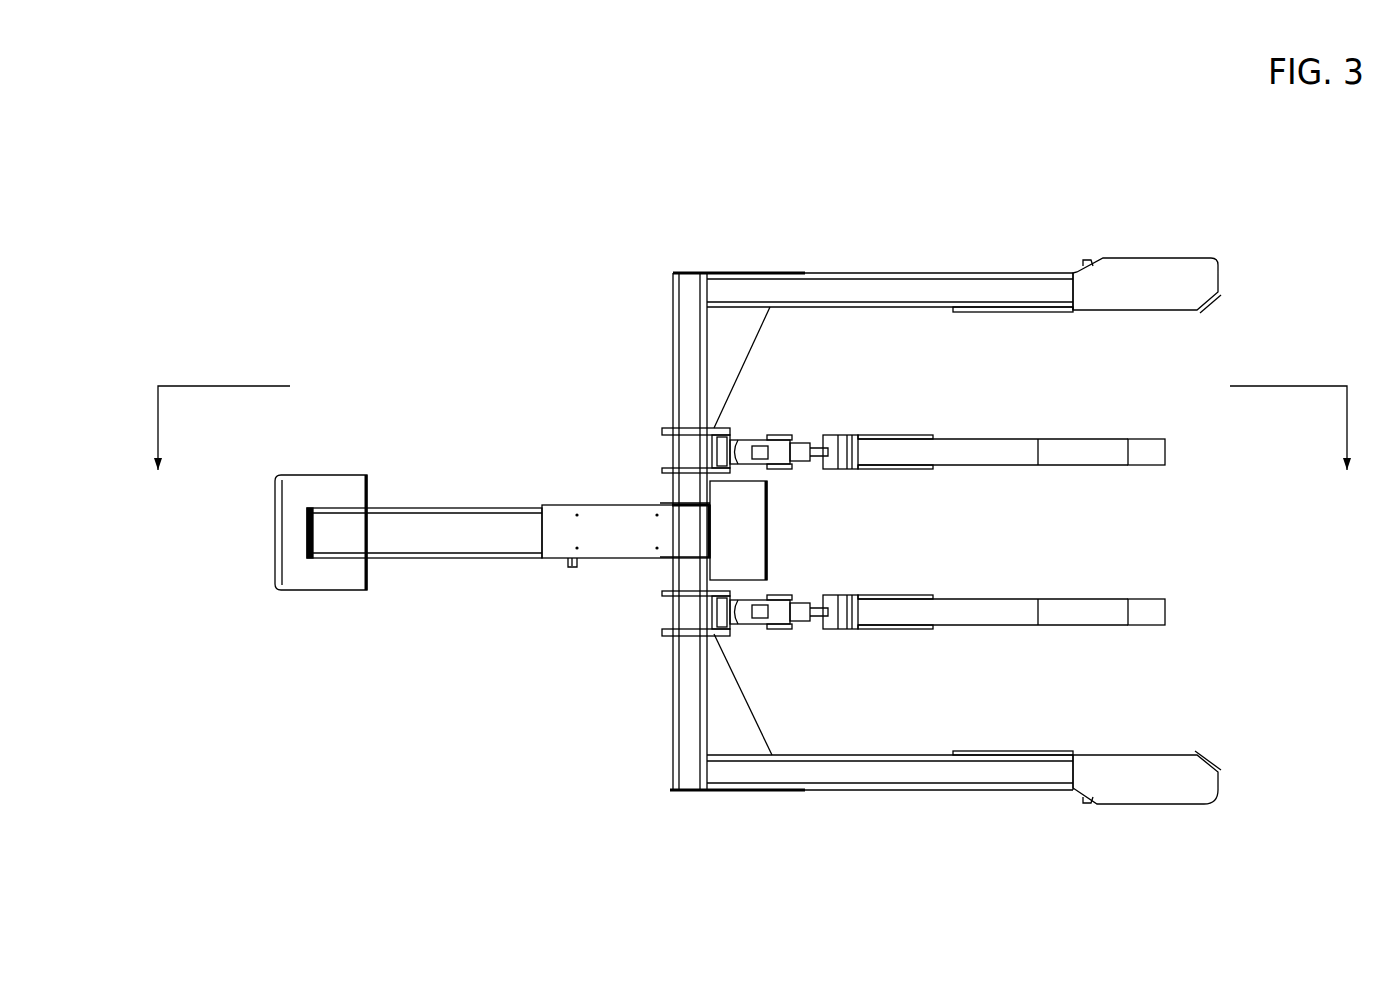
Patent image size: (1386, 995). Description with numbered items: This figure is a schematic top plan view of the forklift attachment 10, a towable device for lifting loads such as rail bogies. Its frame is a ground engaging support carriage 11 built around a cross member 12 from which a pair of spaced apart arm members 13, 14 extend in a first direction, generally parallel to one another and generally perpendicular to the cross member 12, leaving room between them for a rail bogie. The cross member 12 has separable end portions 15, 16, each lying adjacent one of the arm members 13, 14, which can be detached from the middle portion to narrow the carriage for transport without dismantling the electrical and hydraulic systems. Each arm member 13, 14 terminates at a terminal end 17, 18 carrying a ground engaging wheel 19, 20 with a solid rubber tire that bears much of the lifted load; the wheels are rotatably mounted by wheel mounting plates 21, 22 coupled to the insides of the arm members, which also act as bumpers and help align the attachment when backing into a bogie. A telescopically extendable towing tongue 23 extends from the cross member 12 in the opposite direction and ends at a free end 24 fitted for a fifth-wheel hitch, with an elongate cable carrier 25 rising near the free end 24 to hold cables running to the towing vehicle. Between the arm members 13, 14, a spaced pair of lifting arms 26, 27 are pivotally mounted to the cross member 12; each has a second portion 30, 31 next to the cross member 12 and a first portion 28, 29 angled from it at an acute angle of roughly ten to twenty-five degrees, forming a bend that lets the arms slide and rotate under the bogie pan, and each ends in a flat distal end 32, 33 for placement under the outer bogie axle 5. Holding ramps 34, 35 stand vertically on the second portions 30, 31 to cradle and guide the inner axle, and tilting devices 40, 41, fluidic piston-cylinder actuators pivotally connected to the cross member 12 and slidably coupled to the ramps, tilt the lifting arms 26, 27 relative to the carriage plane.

The outer bogie axle 5 is at (753, 415).
The forklift attachment 10 is at (507, 282).
The support carriage 11 is at (690, 257).
The cross member 12 is at (672, 487).
The arm member 13 is at (865, 775).
The arm member 14 is at (880, 291).
The end portion 15 is at (668, 727).
The end portion 16 is at (678, 351).
The terminal end 17 is at (1073, 790).
The terminal end 18 is at (1068, 275).
The ground engaging wheel 19 is at (1085, 806).
The ground engaging wheel 20 is at (1085, 258).
The wheel mounting plate 21 is at (1207, 805).
The wheel mounting plate 22 is at (1198, 275).
The towing tongue 23 is at (450, 567).
The free end 24 is at (275, 542).
The cable carrier 25 is at (312, 530).
The lifting arm 26 is at (1040, 608).
The lifting arm 27 is at (1040, 448).
The first portion 28 is at (1097, 610).
The first portion 29 is at (1097, 450).
The second portion 30 is at (980, 608).
The second portion 31 is at (990, 450).
The lower arm end piece 32 is at (1157, 620).
The upper arm end piece 33 is at (1157, 457).
The holding ramp 34 is at (915, 628).
The holding ramp 35 is at (915, 470).
The tilting device 40 is at (745, 622).
The tilting device 41 is at (745, 447).